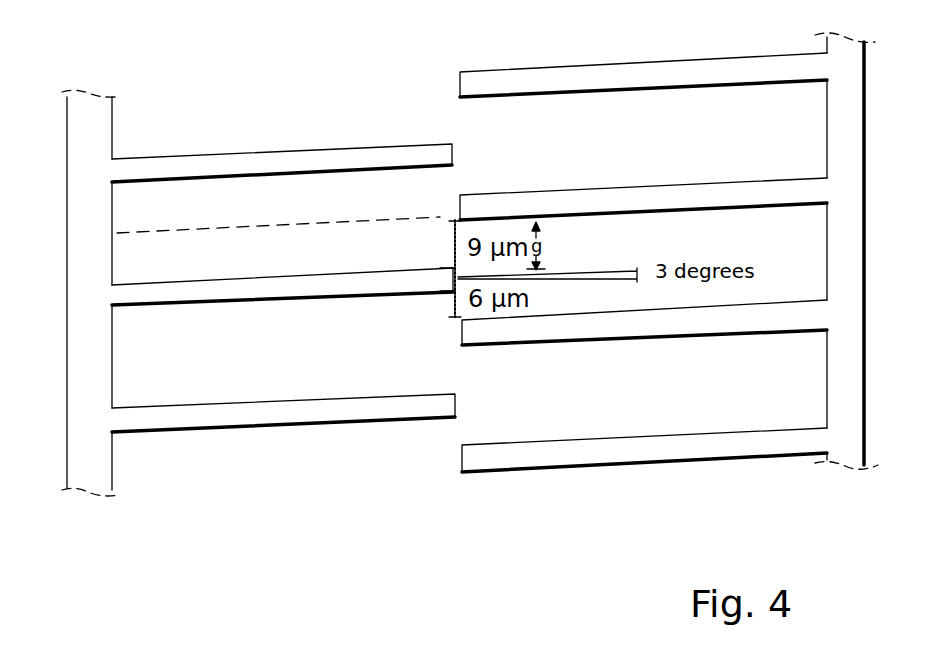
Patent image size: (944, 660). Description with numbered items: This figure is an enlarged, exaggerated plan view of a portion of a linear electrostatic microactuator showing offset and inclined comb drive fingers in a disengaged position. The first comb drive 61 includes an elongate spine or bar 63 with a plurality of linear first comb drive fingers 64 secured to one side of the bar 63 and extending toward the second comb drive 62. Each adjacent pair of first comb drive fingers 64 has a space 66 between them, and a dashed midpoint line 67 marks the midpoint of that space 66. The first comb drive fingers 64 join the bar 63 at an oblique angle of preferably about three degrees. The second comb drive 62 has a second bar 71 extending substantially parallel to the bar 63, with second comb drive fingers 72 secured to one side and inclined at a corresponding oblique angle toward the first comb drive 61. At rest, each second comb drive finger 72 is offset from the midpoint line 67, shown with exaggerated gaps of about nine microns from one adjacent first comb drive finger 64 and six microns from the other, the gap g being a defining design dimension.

The first comb drive 61 is at (67, 458).
The second comb drive 62 is at (870, 405).
The bar 63 is at (96, 123).
The first comb drive fingers 64 is at (408, 161).
The space 66 is at (236, 193).
The midpoint line 67 is at (241, 228).
The second bar 71 is at (856, 98).
The second comb drive fingers 72 is at (516, 80).